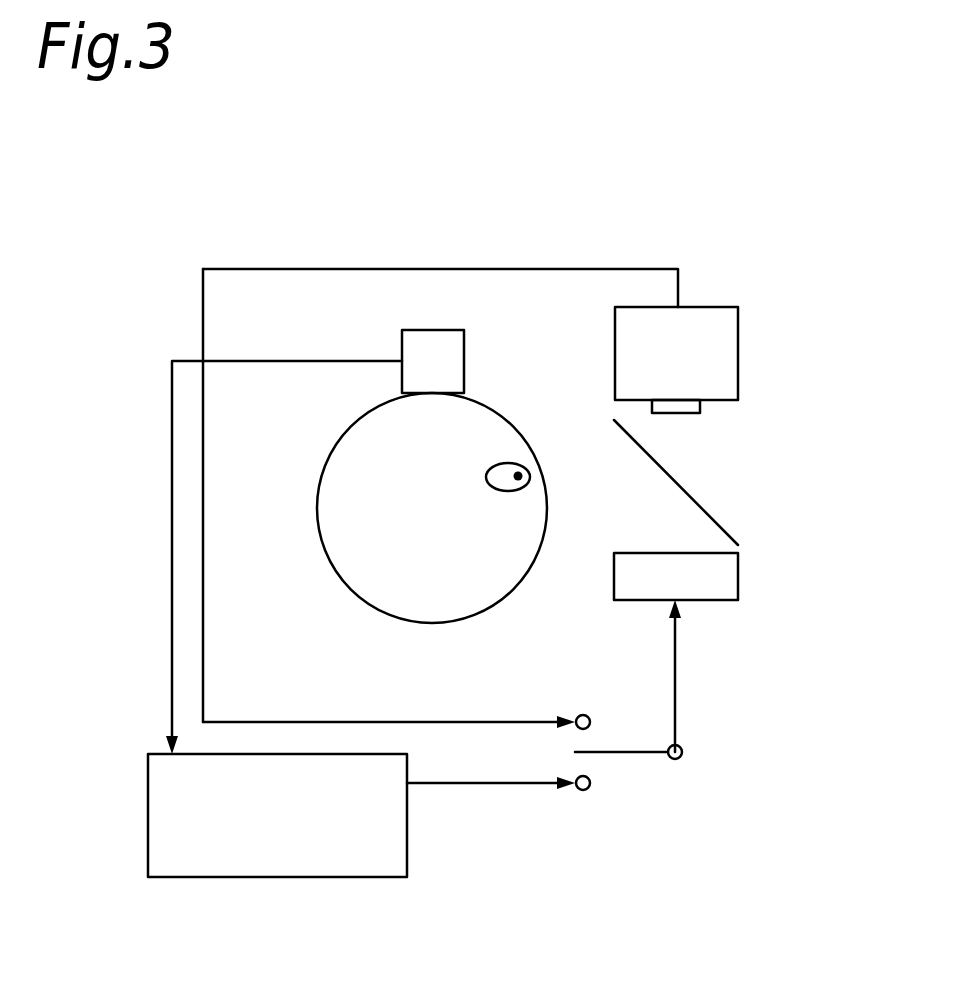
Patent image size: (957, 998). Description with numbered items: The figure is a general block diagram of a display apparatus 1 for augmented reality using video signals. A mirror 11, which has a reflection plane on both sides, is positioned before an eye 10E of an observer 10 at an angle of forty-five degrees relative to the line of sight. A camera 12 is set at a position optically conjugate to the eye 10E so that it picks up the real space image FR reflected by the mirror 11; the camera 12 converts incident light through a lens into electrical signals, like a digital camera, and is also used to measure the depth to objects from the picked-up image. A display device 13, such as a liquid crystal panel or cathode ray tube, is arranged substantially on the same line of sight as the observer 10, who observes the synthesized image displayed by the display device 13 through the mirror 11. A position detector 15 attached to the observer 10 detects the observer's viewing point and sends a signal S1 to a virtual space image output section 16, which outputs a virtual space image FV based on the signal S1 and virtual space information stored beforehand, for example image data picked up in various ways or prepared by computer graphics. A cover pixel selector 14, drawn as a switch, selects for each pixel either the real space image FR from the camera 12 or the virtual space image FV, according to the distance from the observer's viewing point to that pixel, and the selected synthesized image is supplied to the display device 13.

The image display system 1 is at (176, 226).
The observer 10 is at (332, 448).
The eye 10E is at (487, 478).
The mirror 11 is at (710, 512).
The camera 12 is at (738, 352).
The display device 13 is at (738, 577).
The cover pixel selector 14 is at (645, 774).
The position detector 15 is at (434, 330).
The virtual space image output section 16 is at (283, 877).
The signal S1 is at (172, 453).
The real space image FR is at (283, 722).
The virtual space image FV is at (477, 787).